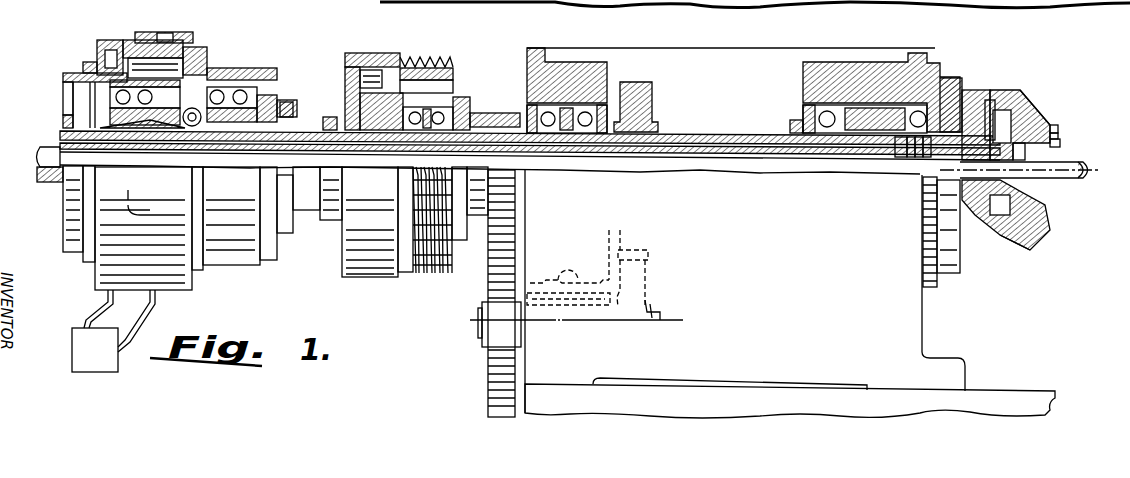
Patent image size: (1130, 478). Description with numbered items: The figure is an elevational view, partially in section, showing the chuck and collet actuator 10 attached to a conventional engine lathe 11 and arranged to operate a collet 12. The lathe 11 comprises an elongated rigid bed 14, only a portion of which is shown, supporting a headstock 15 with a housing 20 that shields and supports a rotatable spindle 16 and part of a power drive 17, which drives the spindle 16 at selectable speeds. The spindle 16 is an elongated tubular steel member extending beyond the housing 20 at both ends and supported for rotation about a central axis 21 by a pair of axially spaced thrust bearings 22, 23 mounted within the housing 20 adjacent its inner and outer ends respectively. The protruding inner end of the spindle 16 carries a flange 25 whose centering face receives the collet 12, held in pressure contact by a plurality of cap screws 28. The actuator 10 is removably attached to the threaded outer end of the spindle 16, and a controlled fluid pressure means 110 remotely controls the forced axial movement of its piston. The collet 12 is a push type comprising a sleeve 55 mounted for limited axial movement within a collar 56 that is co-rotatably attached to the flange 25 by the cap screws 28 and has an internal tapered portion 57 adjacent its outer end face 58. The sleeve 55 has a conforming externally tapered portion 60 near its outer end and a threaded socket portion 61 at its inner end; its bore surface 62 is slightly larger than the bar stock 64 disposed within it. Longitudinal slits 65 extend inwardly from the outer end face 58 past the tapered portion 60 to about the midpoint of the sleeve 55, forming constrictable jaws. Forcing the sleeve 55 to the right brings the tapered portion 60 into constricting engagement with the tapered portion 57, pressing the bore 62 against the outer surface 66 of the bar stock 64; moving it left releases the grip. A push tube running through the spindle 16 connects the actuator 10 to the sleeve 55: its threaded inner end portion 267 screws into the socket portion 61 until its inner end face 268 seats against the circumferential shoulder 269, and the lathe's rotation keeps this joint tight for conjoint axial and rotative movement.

The chuck and collet actuator 10 is at (222, 50).
The lathe 11 is at (458, 357).
The collet 12 is at (1040, 110).
The bed 14 is at (1020, 391).
The headstock 15 is at (927, 340).
The spindle 16 is at (735, 137).
The power drive 17 is at (385, 277).
The housing 20 is at (922, 313).
The central axis 21 is at (1095, 185).
The thrust bearing 22 is at (800, 115).
The thrust bearing 23 is at (527, 117).
The flange 25 is at (975, 90).
The cap screws 28 is at (1022, 101).
The sleeve 55 is at (990, 125).
The collar 56 is at (1055, 130).
The internal tapered portion 57 is at (1084, 130).
The outer end face 58 is at (1060, 152).
The externally tapered portion 60 is at (1053, 200).
The threaded socket portion 61 is at (898, 150).
The internal surface of bore 62 is at (1030, 250).
The bar stock 64 is at (1080, 173).
The longitudinal slits 65 is at (1043, 225).
The outer surface 66 is at (1010, 148).
The controlled fluid pressure means 110 is at (100, 360).
The inner end portion 267 is at (910, 155).
The inner end face 268 is at (918, 157).
The circumferential shoulder 269 is at (927, 160).